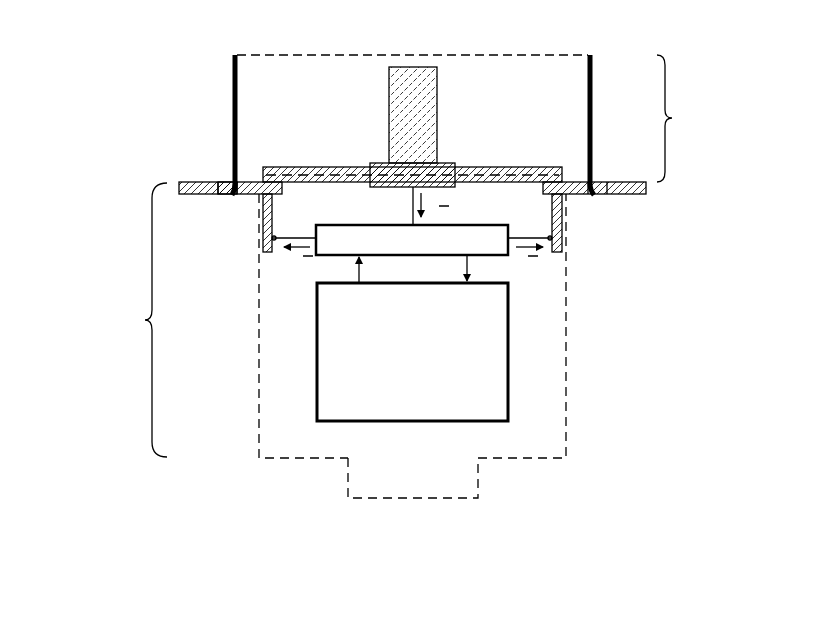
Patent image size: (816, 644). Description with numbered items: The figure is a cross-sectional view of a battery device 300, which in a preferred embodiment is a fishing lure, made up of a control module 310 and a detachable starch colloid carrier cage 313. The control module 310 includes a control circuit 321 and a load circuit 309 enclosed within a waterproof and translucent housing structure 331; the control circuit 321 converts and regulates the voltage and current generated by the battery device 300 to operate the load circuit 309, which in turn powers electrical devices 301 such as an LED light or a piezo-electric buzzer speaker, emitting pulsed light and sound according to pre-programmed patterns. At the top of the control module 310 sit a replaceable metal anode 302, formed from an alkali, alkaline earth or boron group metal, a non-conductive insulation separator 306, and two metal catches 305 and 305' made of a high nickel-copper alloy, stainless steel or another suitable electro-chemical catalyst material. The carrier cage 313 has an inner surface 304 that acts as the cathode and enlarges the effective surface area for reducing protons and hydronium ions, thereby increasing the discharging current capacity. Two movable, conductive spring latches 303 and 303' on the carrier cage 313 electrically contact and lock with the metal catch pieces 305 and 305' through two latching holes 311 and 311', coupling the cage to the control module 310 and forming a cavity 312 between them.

The battery device 300 is at (120, 100).
The electrical devices 301 is at (403, 499).
The replaceable metal anode 302 is at (413, 73).
The conductive spring latch 303 is at (601, 202).
The conductive spring latch 303' is at (222, 203).
The inner surface 304 is at (238, 85).
The metal catch 305 is at (577, 223).
The metal catch 305' is at (247, 223).
The non-conductive insulation separator 306 is at (318, 172).
The load circuit 309 is at (510, 361).
The control module 310 is at (371, 356).
The latching hole 311 is at (618, 125).
The latching hole 311' is at (215, 166).
The cavity 312 is at (533, 88).
The detachable starch colloid carrier cage 313 is at (679, 118).
The control circuit 321 is at (490, 257).
The housing structure 331 is at (566, 431).